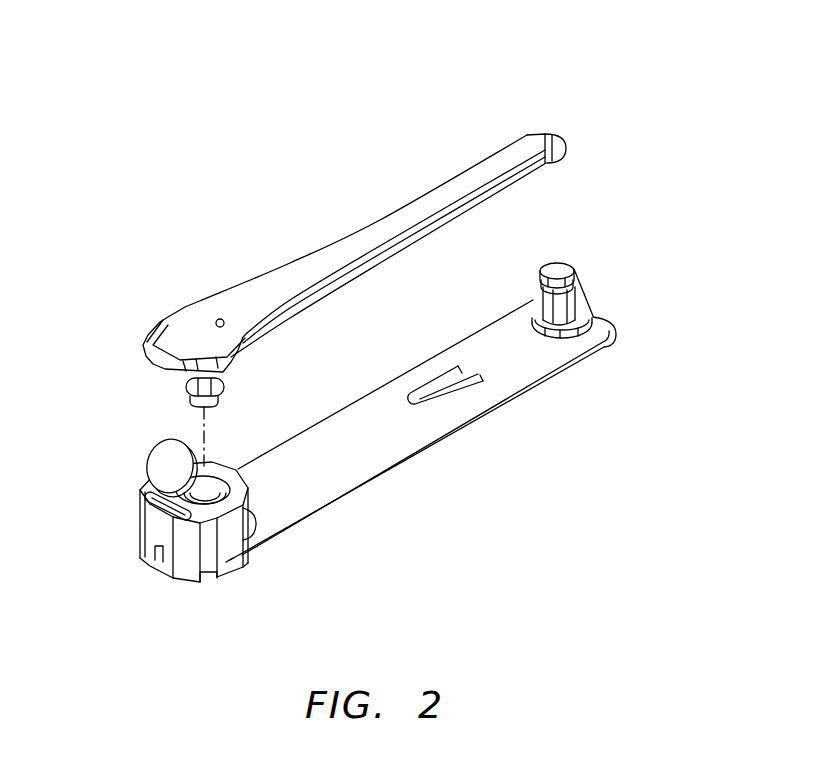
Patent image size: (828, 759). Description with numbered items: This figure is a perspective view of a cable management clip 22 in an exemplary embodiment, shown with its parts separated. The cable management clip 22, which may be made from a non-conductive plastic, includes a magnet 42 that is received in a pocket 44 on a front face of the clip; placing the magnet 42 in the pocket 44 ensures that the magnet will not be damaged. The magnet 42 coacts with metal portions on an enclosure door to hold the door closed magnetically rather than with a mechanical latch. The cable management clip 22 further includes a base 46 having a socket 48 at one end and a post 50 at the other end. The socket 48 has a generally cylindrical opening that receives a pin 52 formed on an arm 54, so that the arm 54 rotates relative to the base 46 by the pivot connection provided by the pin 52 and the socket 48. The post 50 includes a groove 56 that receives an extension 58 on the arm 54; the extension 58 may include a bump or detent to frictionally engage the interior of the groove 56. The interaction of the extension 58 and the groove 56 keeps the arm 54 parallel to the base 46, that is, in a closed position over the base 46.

The cable management clip 22 is at (209, 106).
The magnet 42 is at (155, 462).
The pocket 44 is at (145, 509).
The base 46 is at (393, 468).
The socket 48 is at (231, 563).
The post 50 is at (590, 295).
The pin 52 is at (182, 384).
The arm 54 is at (405, 217).
The groove 56 is at (567, 332).
The extension 58 is at (568, 141).